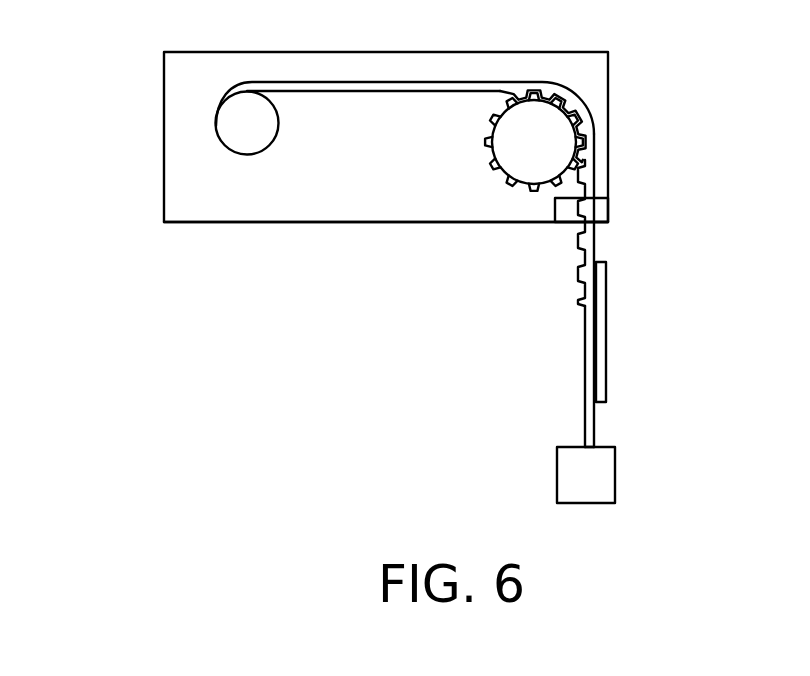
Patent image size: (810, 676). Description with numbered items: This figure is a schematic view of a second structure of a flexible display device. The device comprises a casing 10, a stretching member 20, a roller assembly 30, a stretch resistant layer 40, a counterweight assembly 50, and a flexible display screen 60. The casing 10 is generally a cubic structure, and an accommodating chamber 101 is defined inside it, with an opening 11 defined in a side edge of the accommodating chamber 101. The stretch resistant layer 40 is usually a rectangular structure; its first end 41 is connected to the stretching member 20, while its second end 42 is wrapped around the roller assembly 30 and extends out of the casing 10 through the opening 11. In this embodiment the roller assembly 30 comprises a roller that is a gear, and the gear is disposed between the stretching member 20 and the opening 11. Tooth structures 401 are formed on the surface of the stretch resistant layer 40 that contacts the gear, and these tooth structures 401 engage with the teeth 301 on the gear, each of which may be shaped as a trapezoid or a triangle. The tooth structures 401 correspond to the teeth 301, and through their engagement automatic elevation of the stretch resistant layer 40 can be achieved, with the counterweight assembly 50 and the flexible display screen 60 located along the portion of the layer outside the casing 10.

The casing 10 is at (205, 187).
The accommodating chamber 101 is at (232, 205).
The opening 11 is at (598, 210).
The stretching member 20 is at (247, 123).
The roller assembly 30 is at (622, 102).
The teeth 301 is at (583, 160).
The stretch resistant layer 40 is at (501, 290).
The tooth structures 401 is at (582, 300).
The first end 41 is at (215, 118).
The second end 42 is at (603, 442).
The counterweight assembly 50 is at (585, 473).
The flexible display screen 60 is at (599, 335).